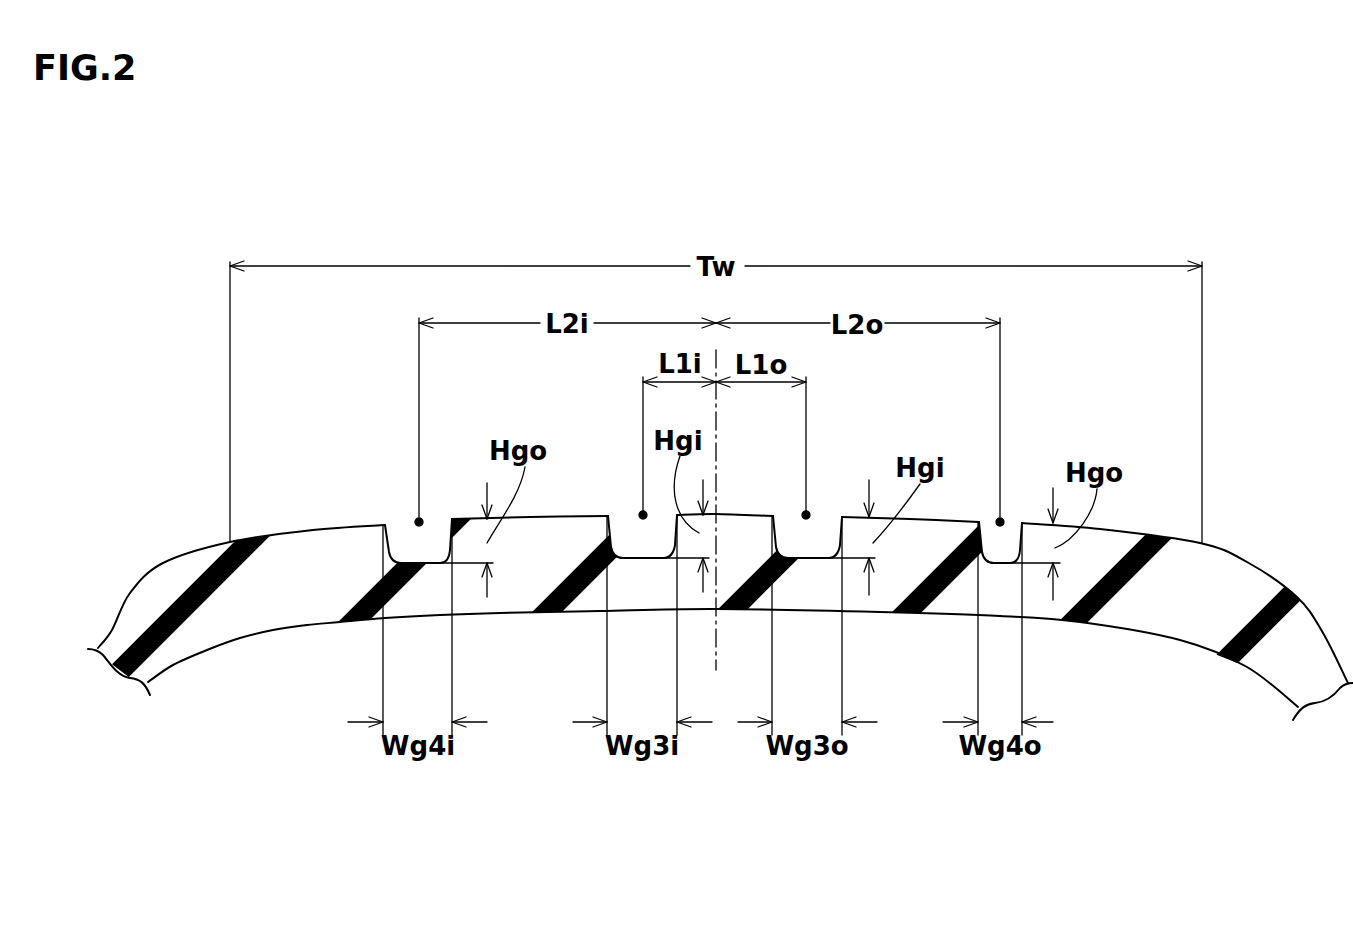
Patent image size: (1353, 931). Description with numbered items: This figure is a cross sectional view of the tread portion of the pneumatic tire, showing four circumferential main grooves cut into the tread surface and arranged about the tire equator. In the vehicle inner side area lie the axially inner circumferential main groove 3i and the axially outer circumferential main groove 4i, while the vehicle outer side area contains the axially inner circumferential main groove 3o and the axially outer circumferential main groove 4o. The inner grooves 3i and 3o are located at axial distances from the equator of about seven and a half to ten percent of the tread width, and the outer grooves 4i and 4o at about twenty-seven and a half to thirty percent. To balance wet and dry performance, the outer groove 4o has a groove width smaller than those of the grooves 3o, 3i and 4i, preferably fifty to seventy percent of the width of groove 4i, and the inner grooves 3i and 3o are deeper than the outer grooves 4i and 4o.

The axially outer circumferential main groove in the vehicle inner side area 4i is at (403, 517).
The axially inner circumferential main groove in the vehicle inner side area 3i is at (627, 513).
The axially inner circumferential main groove in the vehicle outer side area 3o is at (826, 513).
The axially outer circumferential main groove in the vehicle outer side area 4o is at (1012, 517).